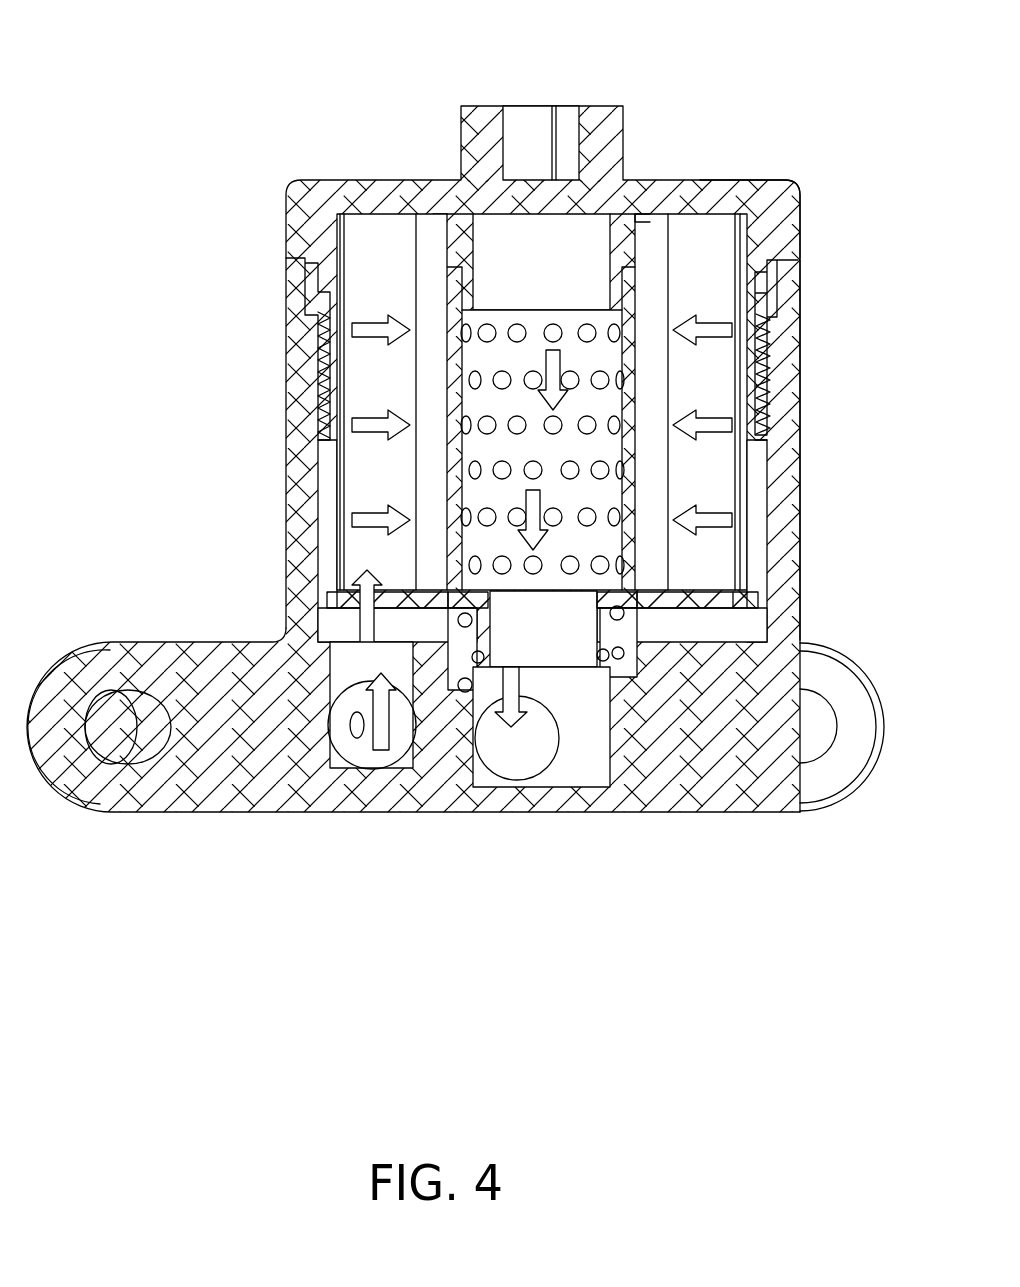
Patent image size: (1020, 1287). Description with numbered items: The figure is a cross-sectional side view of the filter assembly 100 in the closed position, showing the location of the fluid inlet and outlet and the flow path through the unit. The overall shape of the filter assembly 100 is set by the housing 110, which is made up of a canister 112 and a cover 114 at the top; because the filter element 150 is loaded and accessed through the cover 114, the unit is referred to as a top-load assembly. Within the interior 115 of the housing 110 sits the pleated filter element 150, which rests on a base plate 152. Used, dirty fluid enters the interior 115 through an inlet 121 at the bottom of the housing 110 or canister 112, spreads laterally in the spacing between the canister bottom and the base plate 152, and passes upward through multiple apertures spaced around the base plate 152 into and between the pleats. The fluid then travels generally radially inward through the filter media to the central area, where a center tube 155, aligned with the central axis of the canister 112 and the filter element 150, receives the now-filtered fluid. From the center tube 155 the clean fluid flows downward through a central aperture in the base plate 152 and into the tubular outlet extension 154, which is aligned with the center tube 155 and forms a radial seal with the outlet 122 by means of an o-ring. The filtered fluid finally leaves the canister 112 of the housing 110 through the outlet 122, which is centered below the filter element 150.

The filter assembly 100 is at (722, 101).
The housing 110 is at (385, 166).
The canister 112 is at (801, 347).
The cover 114 is at (803, 212).
The interior 115 is at (321, 468).
The filter element 150 is at (343, 506).
The base plate 152 is at (328, 602).
The outlet extension 154 is at (595, 632).
The center tube 155 is at (533, 312).
The inlet 121 is at (380, 770).
The outlet 122 is at (520, 748).